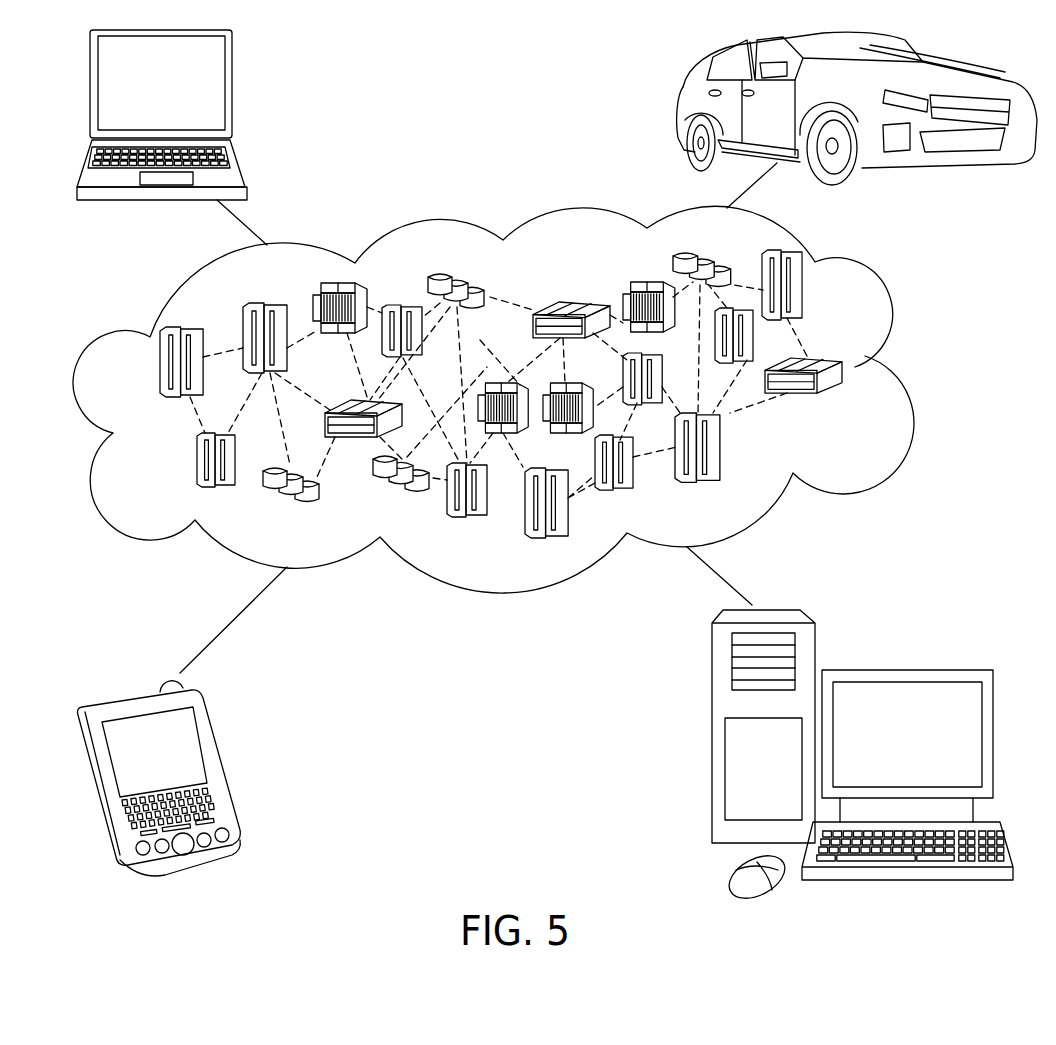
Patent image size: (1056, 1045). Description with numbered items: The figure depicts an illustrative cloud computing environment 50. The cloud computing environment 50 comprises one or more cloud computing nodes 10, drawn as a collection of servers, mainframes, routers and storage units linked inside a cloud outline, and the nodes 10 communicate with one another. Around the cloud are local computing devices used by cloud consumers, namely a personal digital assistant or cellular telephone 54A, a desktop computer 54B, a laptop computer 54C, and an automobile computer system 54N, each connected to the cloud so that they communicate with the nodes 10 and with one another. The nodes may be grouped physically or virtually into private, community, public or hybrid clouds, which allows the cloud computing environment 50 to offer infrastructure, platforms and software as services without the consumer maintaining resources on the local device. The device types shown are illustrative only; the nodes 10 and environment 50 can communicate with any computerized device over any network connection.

The cloud computing environment 50 is at (518, 399).
The cloud computing node 10 is at (846, 403).
The personal digital assistant or cellular telephone 54A is at (220, 763).
The desktop computer 54B is at (903, 668).
The laptop computer 54C is at (230, 92).
The automobile computer system 54N is at (678, 110).